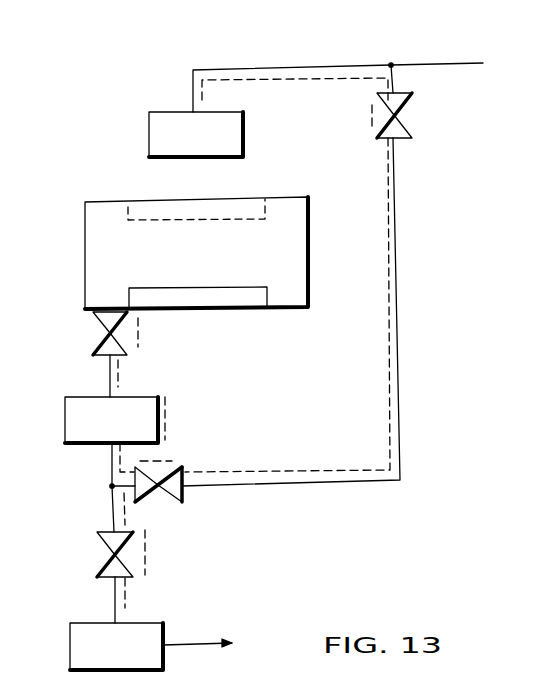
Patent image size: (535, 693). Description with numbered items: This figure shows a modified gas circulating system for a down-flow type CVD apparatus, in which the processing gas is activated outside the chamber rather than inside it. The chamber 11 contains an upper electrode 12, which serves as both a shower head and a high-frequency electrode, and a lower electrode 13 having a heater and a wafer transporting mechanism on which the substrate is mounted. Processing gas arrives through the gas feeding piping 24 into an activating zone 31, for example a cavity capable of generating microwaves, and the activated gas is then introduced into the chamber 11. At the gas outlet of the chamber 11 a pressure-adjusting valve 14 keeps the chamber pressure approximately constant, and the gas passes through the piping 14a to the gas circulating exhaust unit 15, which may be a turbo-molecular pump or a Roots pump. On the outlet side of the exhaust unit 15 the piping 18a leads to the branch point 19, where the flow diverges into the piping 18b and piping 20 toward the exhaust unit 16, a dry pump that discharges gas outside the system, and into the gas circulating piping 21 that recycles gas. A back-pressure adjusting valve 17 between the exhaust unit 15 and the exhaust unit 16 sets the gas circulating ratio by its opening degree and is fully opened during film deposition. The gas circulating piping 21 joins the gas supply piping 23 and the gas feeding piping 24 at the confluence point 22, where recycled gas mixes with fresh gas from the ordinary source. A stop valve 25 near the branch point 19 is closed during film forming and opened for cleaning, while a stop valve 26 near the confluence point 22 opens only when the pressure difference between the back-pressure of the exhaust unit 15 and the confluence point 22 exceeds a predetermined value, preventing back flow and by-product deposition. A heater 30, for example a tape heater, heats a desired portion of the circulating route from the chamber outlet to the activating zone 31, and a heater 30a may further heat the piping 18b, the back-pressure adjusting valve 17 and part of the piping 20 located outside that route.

The chamber 11 is at (85, 260).
The upper electrode 12 is at (146, 200).
The lower electrode 13 is at (225, 308).
The pressure-adjusting valve 14 is at (100, 325).
The piping 14a is at (110, 373).
The gas circulating exhaust unit 15 is at (65, 422).
The exhaust unit 16 is at (70, 645).
The back-pressure adjusting valve 17 is at (105, 545).
The piping 18a is at (112, 464).
The piping 18b is at (112, 508).
The branch point 19 is at (112, 486).
The piping 20 is at (110, 597).
The gas circulating piping 21 is at (301, 483).
The confluence point 22 is at (392, 64).
The gas supply piping 23 is at (446, 63).
The gas feeding piping 24 is at (296, 68).
The stop valve 25 is at (183, 492).
The stop valve 26 is at (405, 100).
The heater 30 is at (268, 82).
The heater 30a is at (147, 553).
The activating zone 31 is at (170, 112).